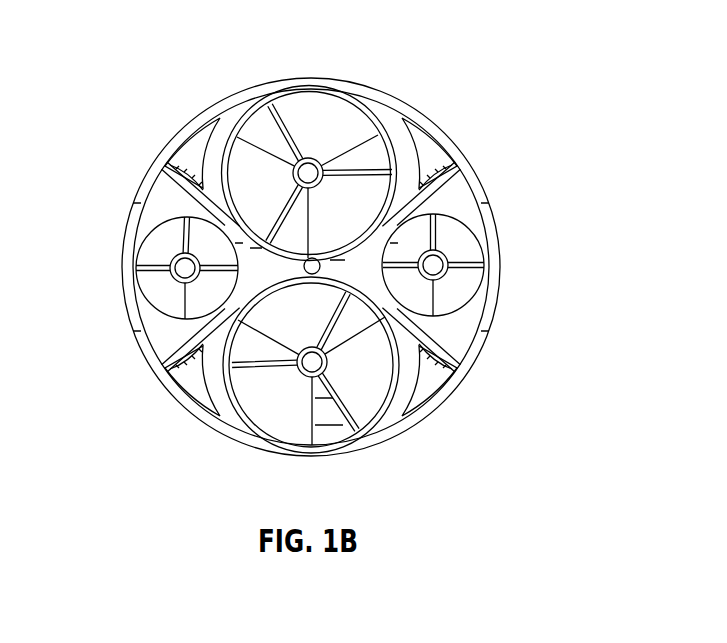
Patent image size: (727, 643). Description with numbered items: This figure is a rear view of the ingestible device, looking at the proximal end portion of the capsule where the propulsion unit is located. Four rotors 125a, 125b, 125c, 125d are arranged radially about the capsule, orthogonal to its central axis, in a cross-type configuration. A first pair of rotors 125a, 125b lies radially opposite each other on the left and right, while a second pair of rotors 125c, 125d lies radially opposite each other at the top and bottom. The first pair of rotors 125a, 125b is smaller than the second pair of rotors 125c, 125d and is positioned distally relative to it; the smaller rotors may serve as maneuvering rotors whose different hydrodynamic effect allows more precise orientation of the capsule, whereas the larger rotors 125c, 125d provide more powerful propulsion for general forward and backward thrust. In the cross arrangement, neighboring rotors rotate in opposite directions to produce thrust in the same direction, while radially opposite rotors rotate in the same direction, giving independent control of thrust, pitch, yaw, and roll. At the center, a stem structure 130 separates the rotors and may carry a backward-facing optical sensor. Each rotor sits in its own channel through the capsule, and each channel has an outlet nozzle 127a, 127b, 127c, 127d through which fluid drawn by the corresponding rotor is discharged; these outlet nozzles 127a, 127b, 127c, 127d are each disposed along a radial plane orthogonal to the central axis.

The rotor 125a is at (147, 288).
The rotor 125b is at (475, 252).
The rotor 125c is at (332, 108).
The rotor 125d is at (283, 412).
The outlet nozzle 127a is at (168, 332).
The outlet nozzle 127b is at (466, 318).
The outlet nozzle 127c is at (263, 124).
The outlet nozzle 127d is at (337, 437).
The stem structure 130 is at (322, 262).